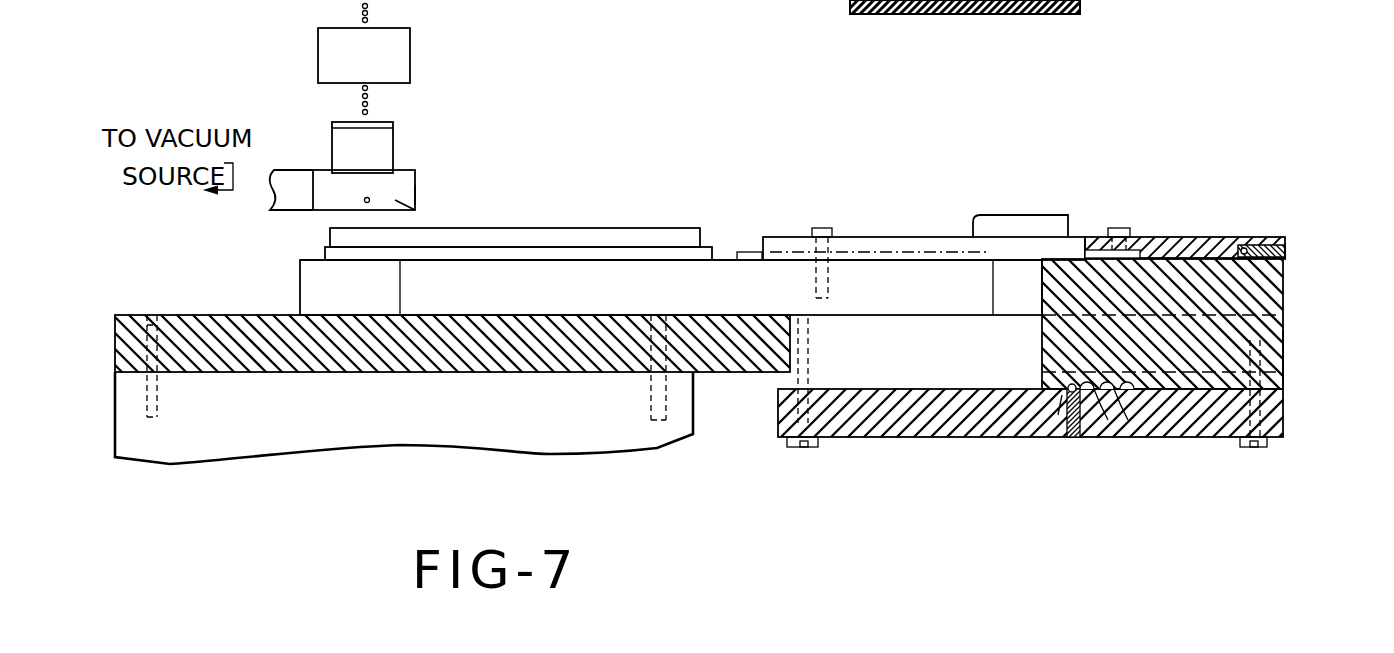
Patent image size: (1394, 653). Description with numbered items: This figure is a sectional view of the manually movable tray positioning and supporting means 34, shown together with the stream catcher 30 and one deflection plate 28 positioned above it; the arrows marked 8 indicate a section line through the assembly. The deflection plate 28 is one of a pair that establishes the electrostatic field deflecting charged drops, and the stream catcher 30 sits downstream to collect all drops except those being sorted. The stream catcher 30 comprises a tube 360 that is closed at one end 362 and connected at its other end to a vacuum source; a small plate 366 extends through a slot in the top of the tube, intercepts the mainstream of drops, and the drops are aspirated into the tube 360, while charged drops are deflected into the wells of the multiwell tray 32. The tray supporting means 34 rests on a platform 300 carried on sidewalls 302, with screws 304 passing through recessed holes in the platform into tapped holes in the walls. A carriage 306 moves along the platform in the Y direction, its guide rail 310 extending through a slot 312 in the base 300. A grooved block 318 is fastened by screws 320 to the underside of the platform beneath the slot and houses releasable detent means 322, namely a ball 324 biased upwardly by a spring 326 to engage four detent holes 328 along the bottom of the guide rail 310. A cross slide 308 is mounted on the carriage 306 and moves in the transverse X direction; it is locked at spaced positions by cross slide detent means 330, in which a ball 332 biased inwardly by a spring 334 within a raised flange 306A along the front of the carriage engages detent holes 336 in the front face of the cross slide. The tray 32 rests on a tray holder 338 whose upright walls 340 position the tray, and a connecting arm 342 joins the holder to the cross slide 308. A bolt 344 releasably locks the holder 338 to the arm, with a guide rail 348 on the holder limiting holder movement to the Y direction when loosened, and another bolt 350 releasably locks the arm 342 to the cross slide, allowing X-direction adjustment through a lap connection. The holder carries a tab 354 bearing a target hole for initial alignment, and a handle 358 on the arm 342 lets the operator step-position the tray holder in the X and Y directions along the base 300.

The deflection plate 28 is at (318, 29).
The direction of movement 8 is at (386, 108).
The plate 366 is at (393, 151).
The stream catcher 30 is at (385, 194).
The closed end of tube 362 is at (416, 197).
The stream catcher tube 360 is at (405, 207).
The multiwell tray 32 is at (606, 218).
The upright walls 340 is at (325, 247).
The tray positioning and supporting means 34 is at (636, 283).
The tray holder 338 is at (300, 271).
The tab 354 is at (400, 287).
The guide rail 348 is at (739, 252).
The connecting arm 342 is at (893, 237).
The bolt 344 is at (816, 228).
The handle 358 is at (975, 215).
The bolt 350 is at (1140, 200).
The cross slide 308 is at (1156, 232).
The raised flange 306A is at (1279, 207).
The ball 332 is at (1250, 246).
The detent holes 336 is at (1240, 246).
The spring 334 is at (1262, 246).
The cross slide detent means 330 is at (1290, 253).
The carriage 306 is at (1216, 348).
The guide rail 310 is at (1284, 352).
The platform 300 is at (404, 350).
The screws 304 is at (143, 314).
The sidewalls 302 is at (115, 440).
The slot 312 is at (890, 362).
The grooved block 318 is at (847, 438).
The screws 320 is at (790, 447).
The releasable detent means 322 is at (1073, 443).
The ball 324 is at (1066, 385).
The spring 326 is at (1062, 395).
The detent holes 328 is at (1130, 393).